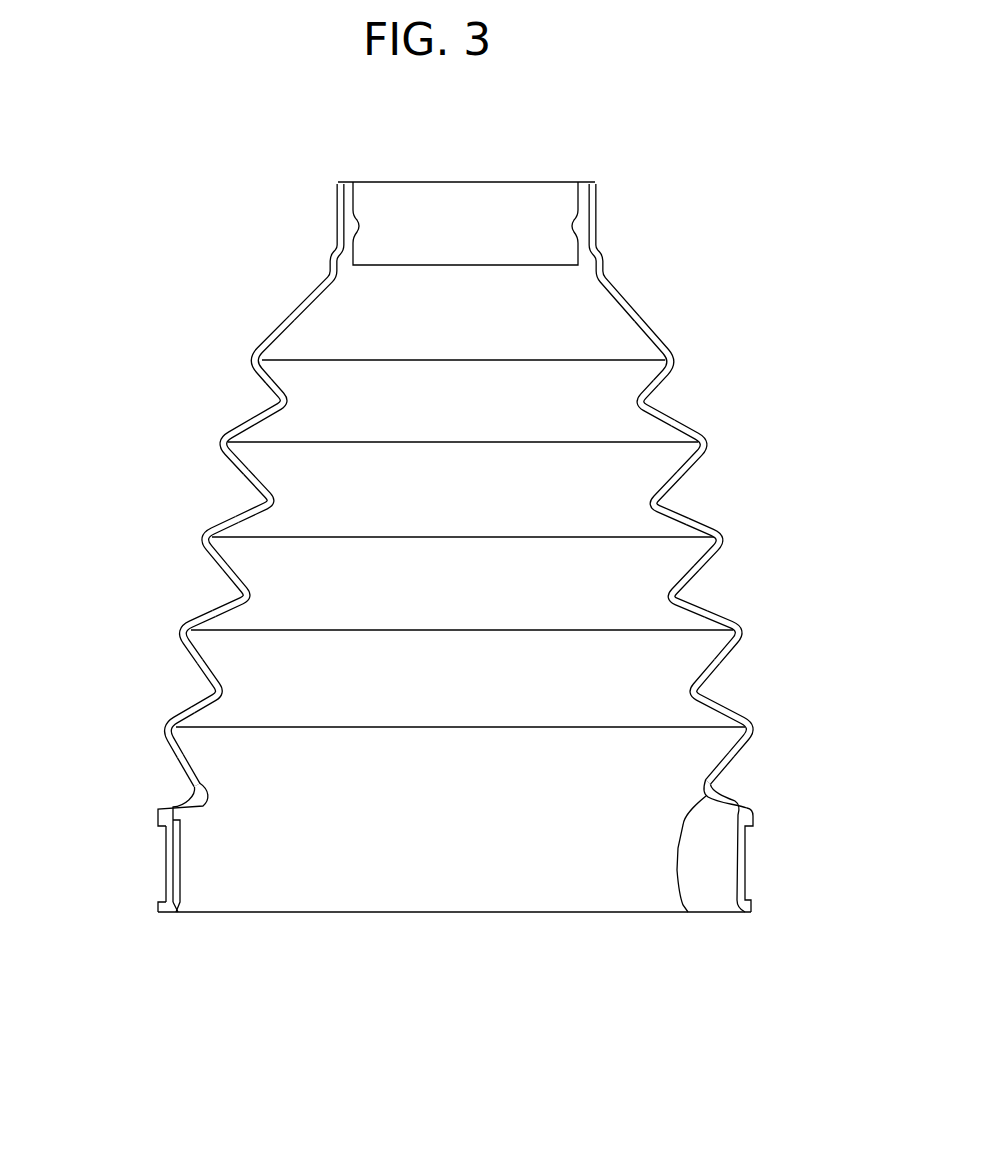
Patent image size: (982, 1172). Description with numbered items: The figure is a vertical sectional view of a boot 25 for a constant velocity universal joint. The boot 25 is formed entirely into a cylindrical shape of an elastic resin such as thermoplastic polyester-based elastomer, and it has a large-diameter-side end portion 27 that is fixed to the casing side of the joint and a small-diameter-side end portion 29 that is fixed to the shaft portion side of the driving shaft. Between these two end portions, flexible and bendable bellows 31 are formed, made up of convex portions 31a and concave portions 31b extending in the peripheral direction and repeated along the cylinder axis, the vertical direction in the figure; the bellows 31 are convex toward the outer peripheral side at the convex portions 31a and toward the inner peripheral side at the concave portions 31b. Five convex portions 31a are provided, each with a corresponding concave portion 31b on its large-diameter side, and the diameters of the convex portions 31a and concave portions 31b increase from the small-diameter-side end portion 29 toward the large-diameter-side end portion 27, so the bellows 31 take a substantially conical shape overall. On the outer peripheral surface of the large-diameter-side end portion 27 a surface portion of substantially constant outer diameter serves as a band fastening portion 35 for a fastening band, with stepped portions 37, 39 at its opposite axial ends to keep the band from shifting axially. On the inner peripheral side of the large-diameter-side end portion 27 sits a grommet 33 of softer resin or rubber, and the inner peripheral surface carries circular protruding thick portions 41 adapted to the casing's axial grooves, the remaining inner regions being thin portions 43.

The boot 25 is at (464, 583).
The large-diameter-side end portion 27 is at (753, 852).
The small-diameter-side end portion 29 is at (592, 230).
The bellows 31 is at (449, 545).
The convex portion 31a is at (247, 350).
The concave portion 31b is at (278, 400).
The grommet 33 is at (172, 913).
The band fastening portion 35 is at (165, 848).
The stepped portion 37 is at (158, 830).
The stepped portion 39 is at (160, 892).
The thick portion 41 is at (676, 850).
The thin portion 43 is at (188, 853).